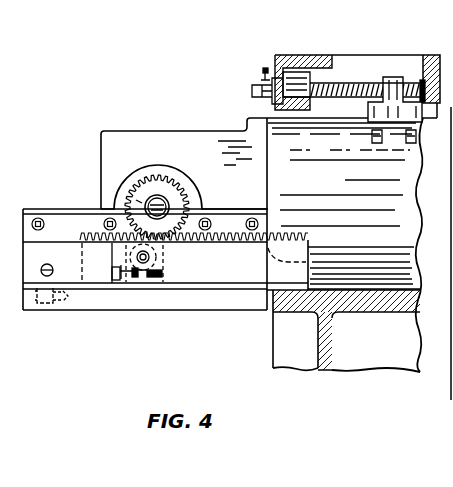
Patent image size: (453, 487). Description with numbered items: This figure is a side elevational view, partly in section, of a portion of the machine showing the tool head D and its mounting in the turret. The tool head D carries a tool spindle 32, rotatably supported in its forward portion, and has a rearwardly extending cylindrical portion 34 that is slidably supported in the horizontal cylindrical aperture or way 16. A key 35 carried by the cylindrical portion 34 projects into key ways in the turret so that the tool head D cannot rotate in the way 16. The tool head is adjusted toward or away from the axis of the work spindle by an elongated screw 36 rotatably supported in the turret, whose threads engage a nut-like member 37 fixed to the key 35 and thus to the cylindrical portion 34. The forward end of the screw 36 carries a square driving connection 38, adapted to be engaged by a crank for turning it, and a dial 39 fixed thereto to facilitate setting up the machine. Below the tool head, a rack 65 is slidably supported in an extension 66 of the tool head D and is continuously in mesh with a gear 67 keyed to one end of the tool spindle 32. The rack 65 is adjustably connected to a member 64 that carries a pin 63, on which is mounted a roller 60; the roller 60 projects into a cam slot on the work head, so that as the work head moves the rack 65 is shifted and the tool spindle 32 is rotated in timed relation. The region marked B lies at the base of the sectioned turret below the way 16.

The horizontal cylindrical aperture or way 16 is at (294, 312).
The tool spindle 32 is at (162, 205).
The rearwardly extending cylindrical portion 34 is at (404, 208).
The key 35 is at (345, 122).
The elongated screw 36 is at (347, 85).
The nut-like member 37 is at (397, 78).
The square driving connection 38 is at (262, 80).
The dial 39 is at (270, 102).
The roller 60 is at (163, 259).
The pin 63 is at (126, 253).
The member 64 is at (147, 281).
The rack 65 is at (293, 242).
The extension 66 is at (47, 209).
The gear 67 is at (140, 200).
The tool head D is at (200, 133).
The bed B is at (325, 366).